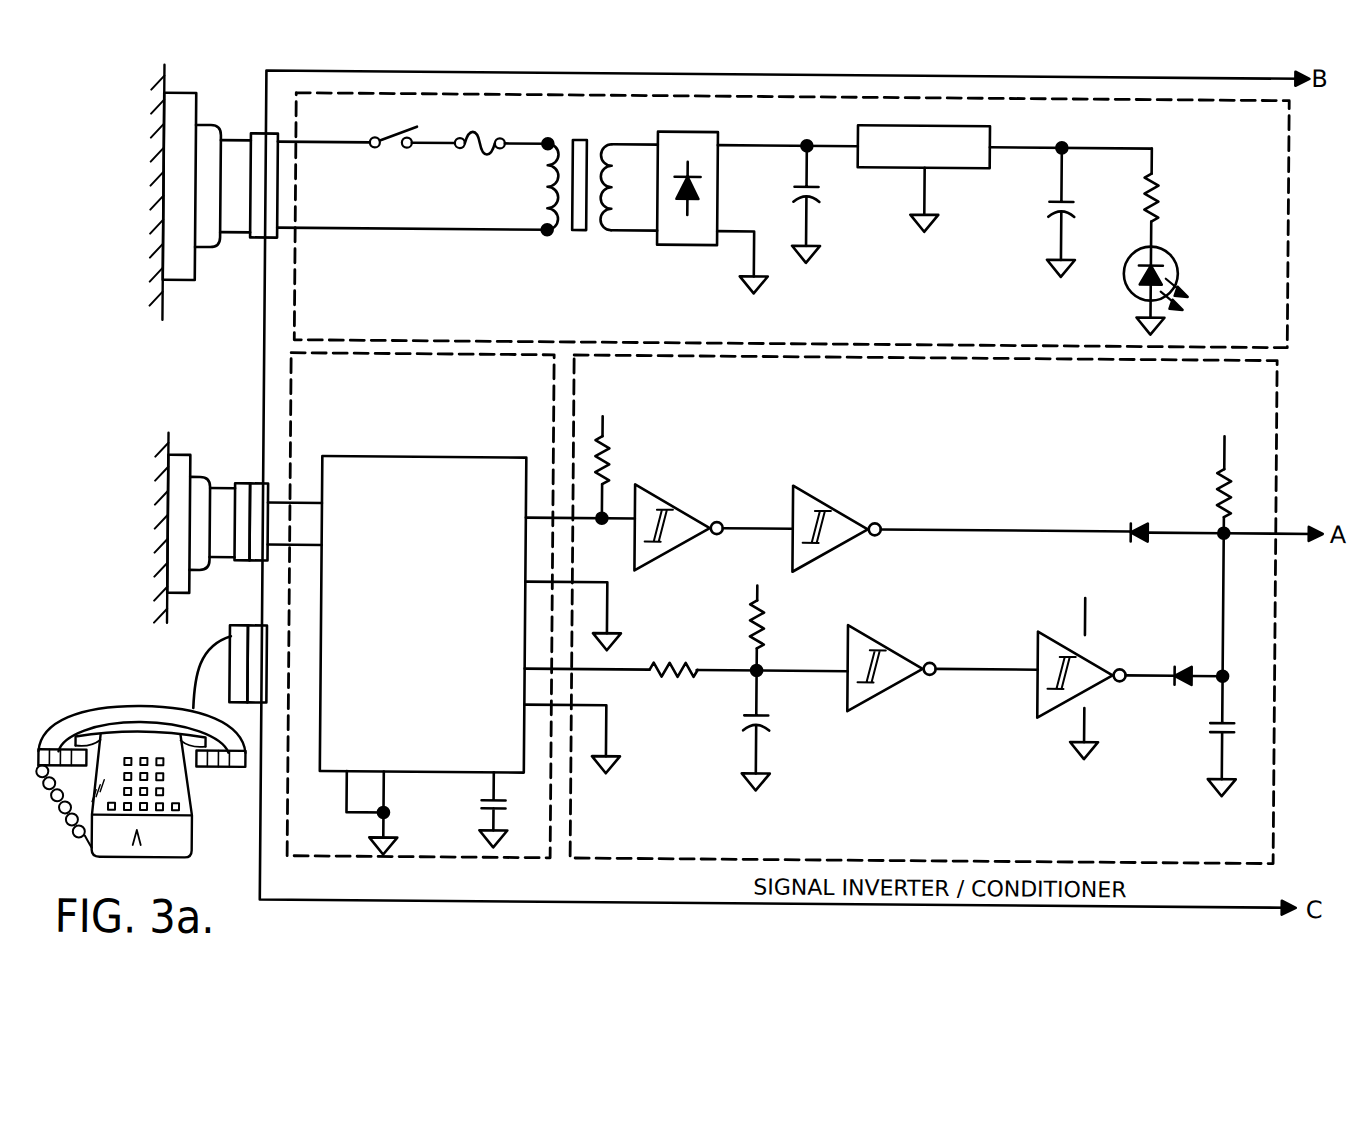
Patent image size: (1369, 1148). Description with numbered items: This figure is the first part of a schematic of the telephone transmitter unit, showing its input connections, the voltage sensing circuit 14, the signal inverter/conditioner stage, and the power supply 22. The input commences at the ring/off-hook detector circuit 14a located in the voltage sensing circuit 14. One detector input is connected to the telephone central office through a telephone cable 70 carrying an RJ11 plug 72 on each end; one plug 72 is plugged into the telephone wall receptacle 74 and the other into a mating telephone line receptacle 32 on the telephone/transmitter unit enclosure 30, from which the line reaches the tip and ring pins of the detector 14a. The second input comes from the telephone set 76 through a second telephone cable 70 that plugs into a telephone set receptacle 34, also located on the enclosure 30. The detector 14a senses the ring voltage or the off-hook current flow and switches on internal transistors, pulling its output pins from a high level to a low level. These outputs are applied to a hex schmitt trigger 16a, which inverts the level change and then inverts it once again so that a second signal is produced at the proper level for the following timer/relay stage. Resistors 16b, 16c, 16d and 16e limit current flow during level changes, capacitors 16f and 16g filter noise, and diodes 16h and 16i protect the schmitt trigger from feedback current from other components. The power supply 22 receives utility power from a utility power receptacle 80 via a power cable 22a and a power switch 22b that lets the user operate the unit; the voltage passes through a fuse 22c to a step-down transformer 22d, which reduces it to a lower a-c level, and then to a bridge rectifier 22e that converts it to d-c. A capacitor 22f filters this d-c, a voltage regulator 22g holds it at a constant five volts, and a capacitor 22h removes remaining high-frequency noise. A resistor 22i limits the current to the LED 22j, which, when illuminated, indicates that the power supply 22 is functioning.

The power supply 22 is at (719, 212).
The power cable 22a is at (240, 240).
The power switch 22b is at (391, 135).
The fuse 22c is at (507, 141).
The step-down transformer 22d is at (557, 232).
The bridge rectifier 22e is at (700, 238).
The capacitor 22f is at (815, 203).
The voltage regulator 22g is at (914, 168).
The capacitor 22h is at (1043, 206).
The resistor 22i is at (1161, 187).
The LED 22j is at (1178, 259).
The utility power receptacle 80 is at (174, 288).
The telephone wall receptacle 74 is at (197, 455).
The RJ11 plug 72 is at (210, 478).
The telephone line receptacle 32 is at (258, 492).
The telephone set receptacle 34 is at (258, 631).
The telephone/transmitter unit enclosure 30 is at (264, 863).
The ring/off-hook detector circuit 14a is at (444, 606).
The voltage sensing circuit 14 is at (509, 813).
The hex schmitt trigger 16a is at (677, 507).
The resistor 16b is at (613, 470).
The resistor 16c is at (669, 662).
The resistor 16d is at (766, 641).
The resistor 16e is at (1216, 489).
The capacitor 16f is at (766, 726).
The capacitor 16g is at (1215, 732).
The diode 16h is at (1138, 525).
The diode 16i is at (1180, 680).
The telephone cable 70 is at (145, 797).
The telephone set 76 is at (97, 858).